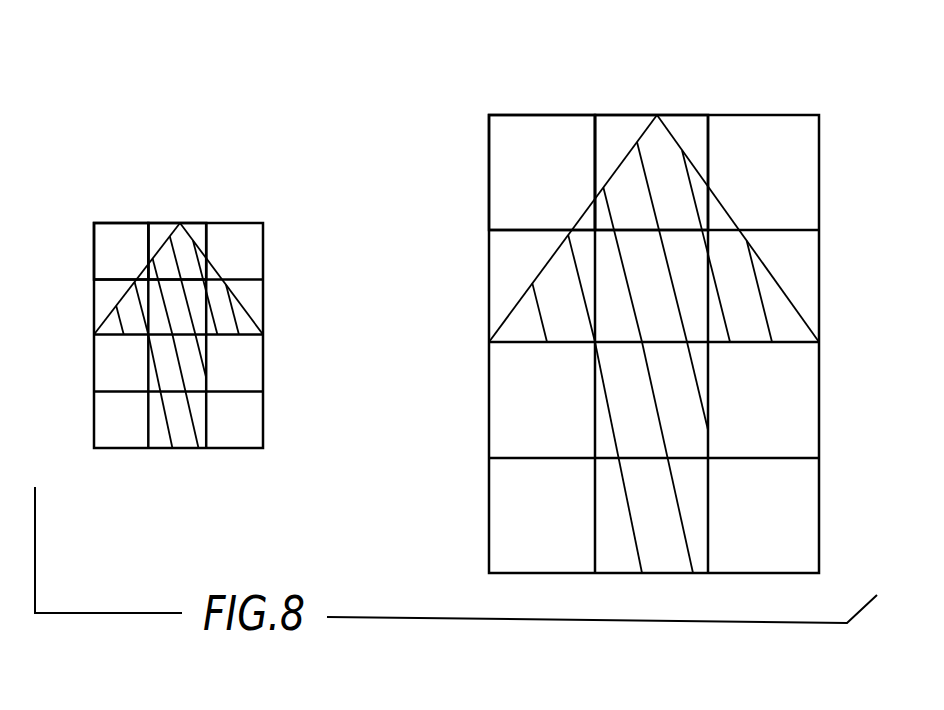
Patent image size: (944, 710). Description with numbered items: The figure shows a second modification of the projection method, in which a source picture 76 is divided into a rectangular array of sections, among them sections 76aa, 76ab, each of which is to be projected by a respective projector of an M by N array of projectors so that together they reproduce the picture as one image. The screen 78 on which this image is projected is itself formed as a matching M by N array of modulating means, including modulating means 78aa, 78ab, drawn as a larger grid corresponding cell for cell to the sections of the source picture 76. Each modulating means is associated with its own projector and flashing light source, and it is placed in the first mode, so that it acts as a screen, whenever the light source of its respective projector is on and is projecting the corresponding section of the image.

The source picture 76 is at (180, 164).
The section of source picture 76aa is at (120, 237).
The section of source picture 76ab is at (183, 227).
The screen 78 is at (772, 92).
The modulating means 78aa is at (537, 125).
The modulating means 78ab is at (622, 125).